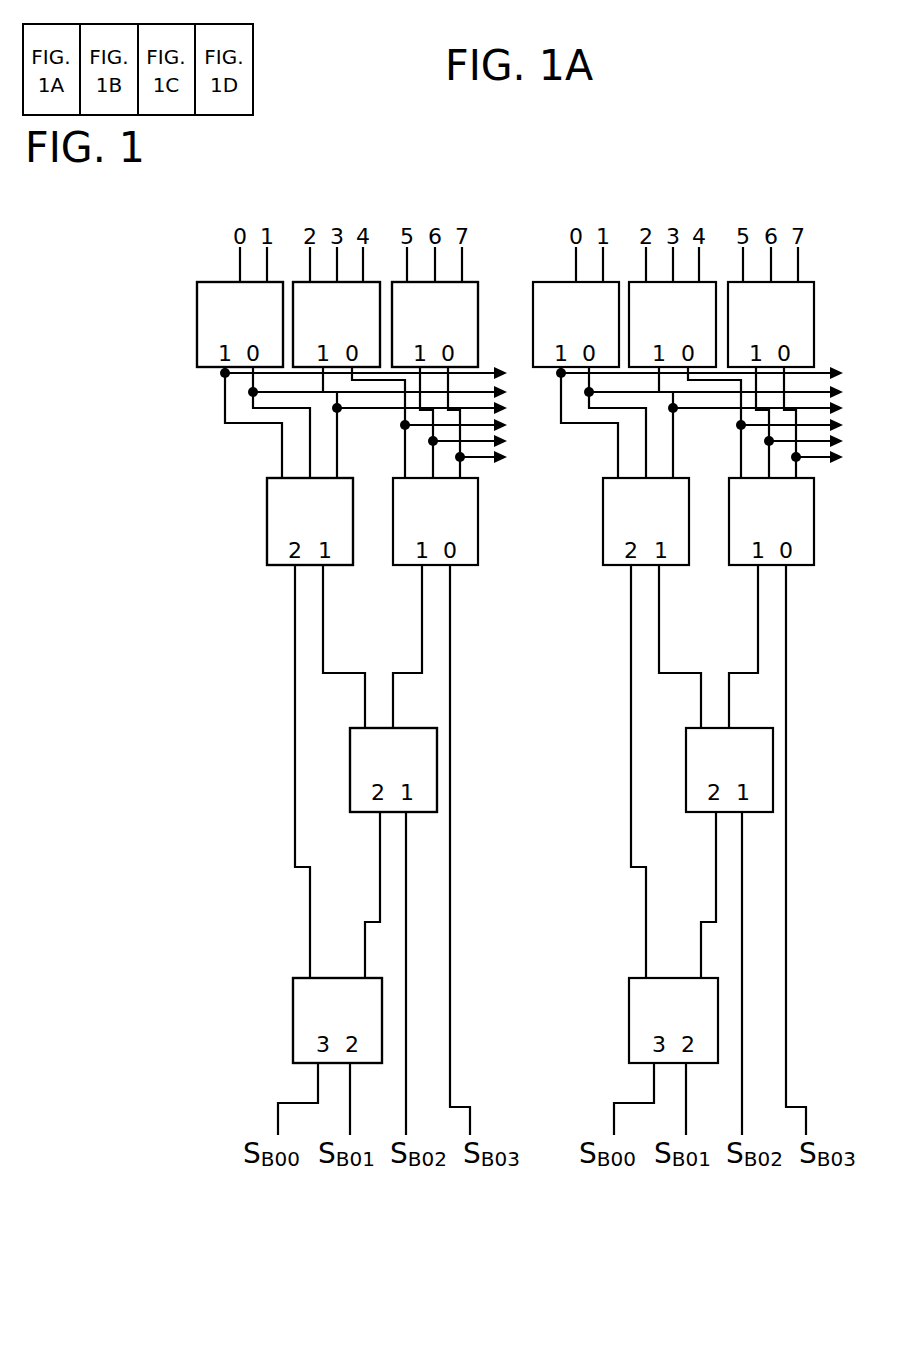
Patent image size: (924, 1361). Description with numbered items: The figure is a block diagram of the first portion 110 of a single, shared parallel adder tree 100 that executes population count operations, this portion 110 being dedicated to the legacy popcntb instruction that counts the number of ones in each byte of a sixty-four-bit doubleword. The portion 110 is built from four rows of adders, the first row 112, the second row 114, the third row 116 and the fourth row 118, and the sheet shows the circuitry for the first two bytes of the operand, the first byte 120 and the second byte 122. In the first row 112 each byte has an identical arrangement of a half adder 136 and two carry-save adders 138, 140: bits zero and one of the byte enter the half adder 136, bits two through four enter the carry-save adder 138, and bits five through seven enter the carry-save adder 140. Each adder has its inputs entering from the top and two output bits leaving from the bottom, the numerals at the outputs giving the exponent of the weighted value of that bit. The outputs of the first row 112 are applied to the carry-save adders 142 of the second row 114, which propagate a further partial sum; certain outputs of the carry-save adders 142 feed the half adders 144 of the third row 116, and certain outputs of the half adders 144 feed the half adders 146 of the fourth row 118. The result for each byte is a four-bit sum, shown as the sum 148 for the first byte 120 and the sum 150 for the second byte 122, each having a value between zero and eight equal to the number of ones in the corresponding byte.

The shared parallel adder tree 100 is at (826, 199).
The first portion of the tree 110 is at (797, 107).
The Row 1 112 is at (128, 317).
The Row 2 114 is at (125, 497).
The Row 3 116 is at (125, 745).
The Row 4 118 is at (125, 993).
The Byte 0 120 is at (307, 155).
The Byte 1 122 is at (637, 147).
The half adder 136 is at (205, 279).
The carry-save adder 138 is at (375, 281).
The carry-save adder 140 is at (479, 281).
The carry-save adder 142 is at (265, 562).
The half adder 144 is at (349, 811).
The half adder 146 is at (292, 1037).
The 4-bit sum 148 is at (333, 1162).
The 4-bit sum 150 is at (668, 1172).